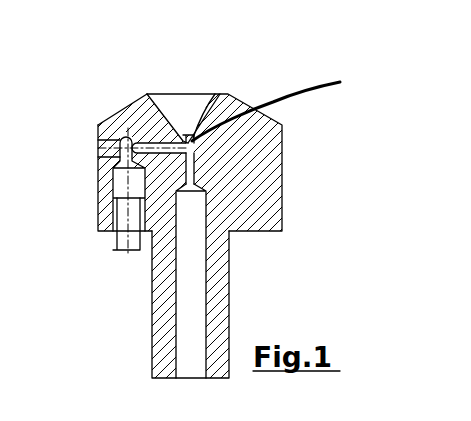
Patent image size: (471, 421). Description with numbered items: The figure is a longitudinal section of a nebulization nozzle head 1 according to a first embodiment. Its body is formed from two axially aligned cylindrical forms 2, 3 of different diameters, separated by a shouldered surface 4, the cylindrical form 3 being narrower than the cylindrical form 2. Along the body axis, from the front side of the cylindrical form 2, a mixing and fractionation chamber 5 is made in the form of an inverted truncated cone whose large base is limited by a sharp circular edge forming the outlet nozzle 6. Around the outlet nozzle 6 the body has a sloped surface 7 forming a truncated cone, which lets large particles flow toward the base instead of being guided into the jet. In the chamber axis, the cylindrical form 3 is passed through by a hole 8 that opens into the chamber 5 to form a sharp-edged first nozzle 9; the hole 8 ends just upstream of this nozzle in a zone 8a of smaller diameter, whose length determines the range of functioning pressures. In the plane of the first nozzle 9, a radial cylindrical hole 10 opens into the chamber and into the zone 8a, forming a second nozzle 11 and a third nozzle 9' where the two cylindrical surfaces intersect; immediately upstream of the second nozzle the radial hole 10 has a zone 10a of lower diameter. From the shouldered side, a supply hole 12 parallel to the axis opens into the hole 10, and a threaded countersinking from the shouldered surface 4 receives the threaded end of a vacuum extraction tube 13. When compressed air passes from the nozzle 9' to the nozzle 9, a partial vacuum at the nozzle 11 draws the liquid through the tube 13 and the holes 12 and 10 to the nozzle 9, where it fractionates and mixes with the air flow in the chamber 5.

The nebulization nozzle head 1 is at (151, 349).
The cylindrical form 2 is at (77, 132).
The cylindrical form 3 is at (153, 298).
The shouldered surface 4 is at (263, 231).
The mixing and fractionation chamber 5 is at (193, 107).
The outlet nozzle 6 is at (148, 93).
The sloped surface 7 is at (133, 101).
The hole 8 is at (197, 298).
The zone having a smaller diameter 8a is at (204, 184).
The first nozzle 9 is at (235, 100).
The third nozzle 9' is at (260, 149).
The radial cylindrical hole 10 is at (148, 145).
The zone having a lower diameter 10a is at (293, 99).
The second nozzle 11 is at (187, 141).
The supply hole 12 is at (117, 188).
The vacuum extraction tube 13 is at (117, 250).